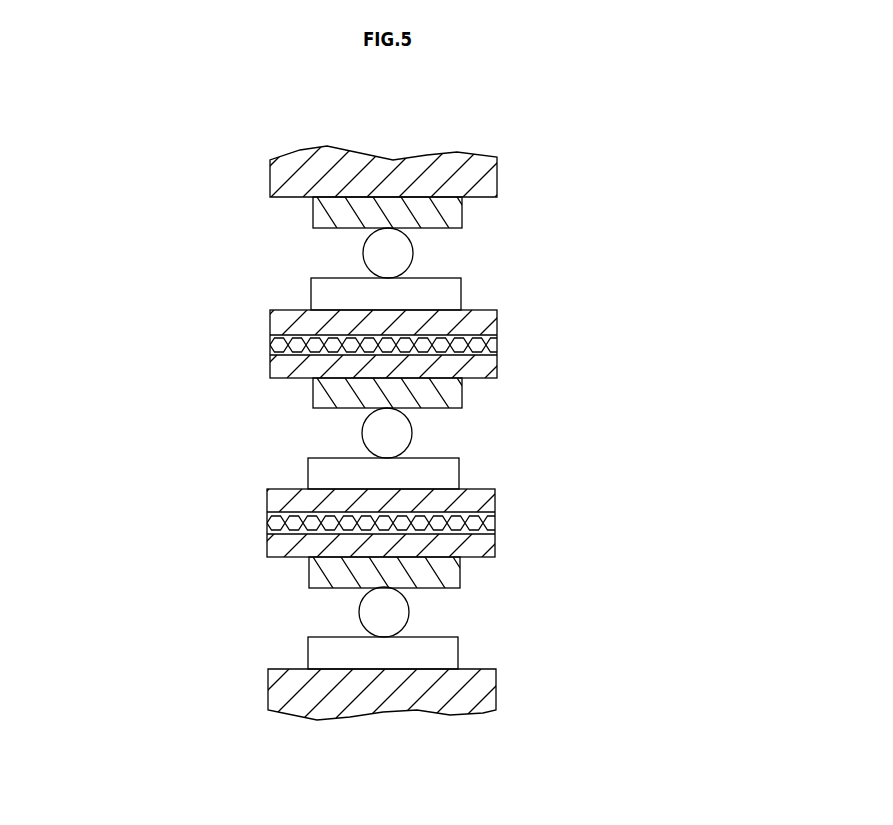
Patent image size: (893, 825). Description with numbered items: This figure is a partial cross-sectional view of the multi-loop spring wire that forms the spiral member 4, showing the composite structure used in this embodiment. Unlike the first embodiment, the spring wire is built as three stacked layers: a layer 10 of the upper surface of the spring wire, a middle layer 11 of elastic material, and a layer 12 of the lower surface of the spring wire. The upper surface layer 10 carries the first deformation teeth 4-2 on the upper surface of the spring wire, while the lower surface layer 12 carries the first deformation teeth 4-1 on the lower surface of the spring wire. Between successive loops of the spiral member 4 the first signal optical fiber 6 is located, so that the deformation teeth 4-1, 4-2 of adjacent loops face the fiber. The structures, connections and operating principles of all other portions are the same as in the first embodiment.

The spiral member 4 is at (278, 338).
The first deformation teeth on the lower surface of the spring wire 4-1 is at (323, 575).
The first deformation teeth on the upper surface of the spring wire 4-2 is at (443, 657).
The first signal optical fiber 6 is at (397, 620).
The layer of the upper surface of the spring wire 10 is at (282, 502).
The layer of elastic material 11 is at (267, 535).
The layer of the lower surface of the spring wire 12 is at (310, 545).